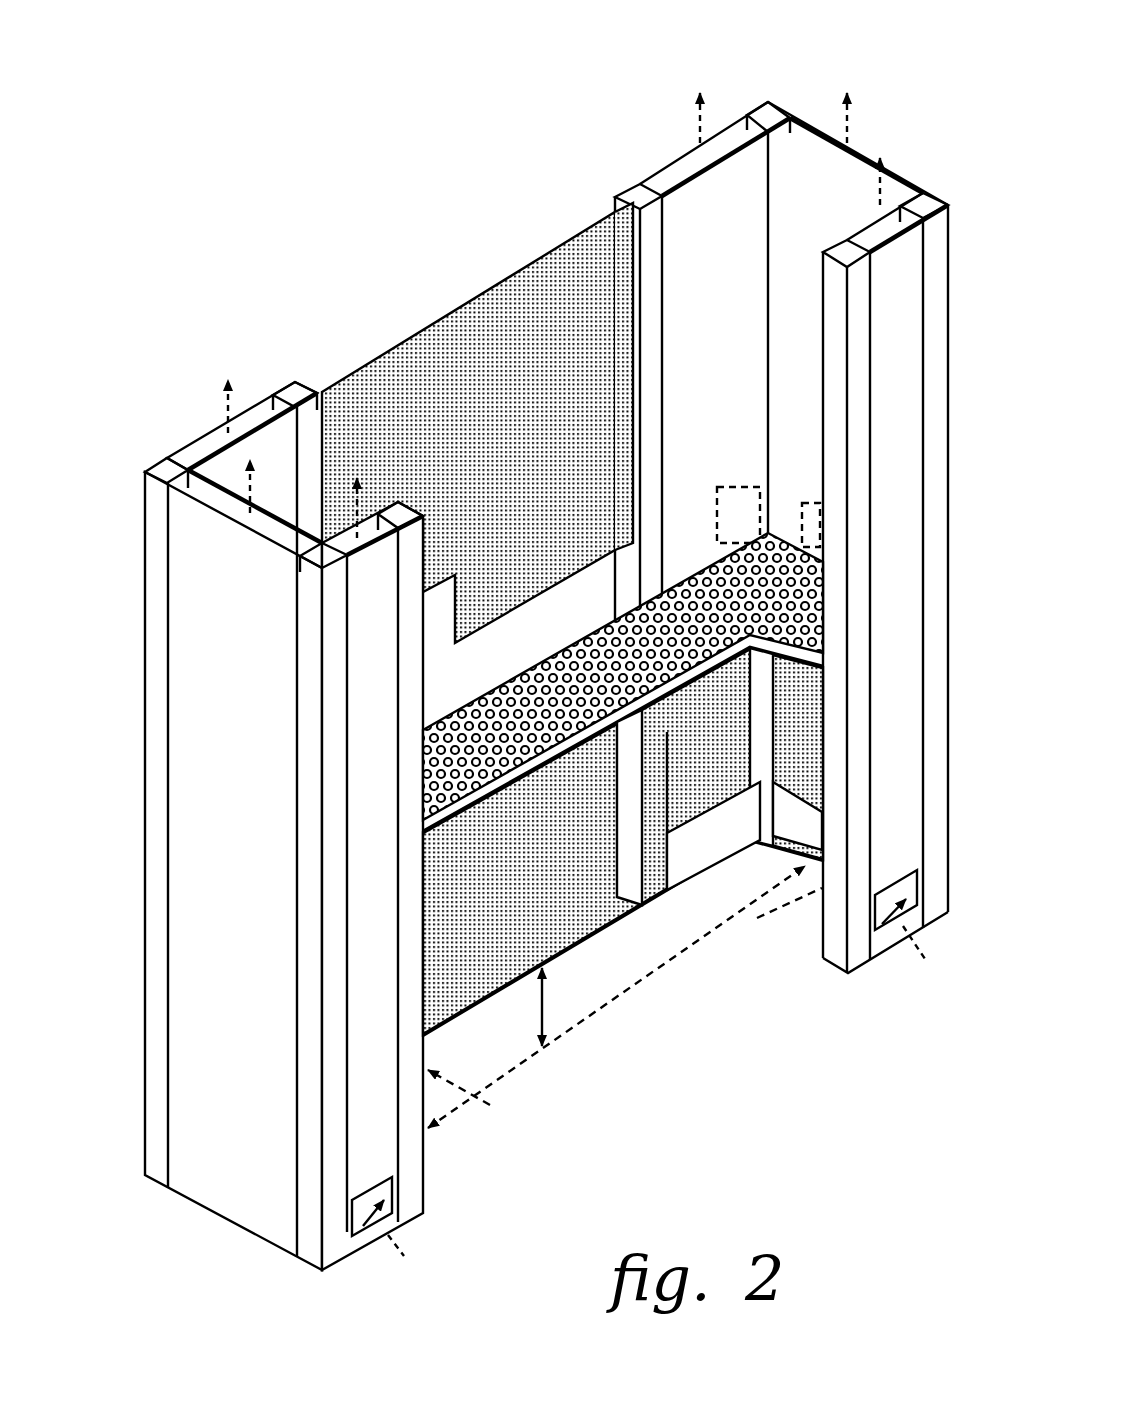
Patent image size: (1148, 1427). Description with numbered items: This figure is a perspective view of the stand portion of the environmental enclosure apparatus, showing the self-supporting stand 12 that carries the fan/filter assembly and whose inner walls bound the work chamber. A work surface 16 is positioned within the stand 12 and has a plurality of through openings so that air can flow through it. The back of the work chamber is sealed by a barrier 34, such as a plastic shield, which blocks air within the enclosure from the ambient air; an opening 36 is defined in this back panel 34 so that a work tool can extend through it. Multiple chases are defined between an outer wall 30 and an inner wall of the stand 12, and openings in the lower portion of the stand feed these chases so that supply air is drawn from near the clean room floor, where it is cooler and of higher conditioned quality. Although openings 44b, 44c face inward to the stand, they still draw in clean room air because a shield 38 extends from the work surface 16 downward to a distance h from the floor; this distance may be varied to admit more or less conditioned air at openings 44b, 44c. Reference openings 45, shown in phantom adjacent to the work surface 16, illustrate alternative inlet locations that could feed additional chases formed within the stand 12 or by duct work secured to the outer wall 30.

The self-supporting stand 12 is at (254, 818).
The work surface 16 is at (593, 640).
The outer wall 30 is at (752, 539).
The barrier 34 is at (456, 302).
The opening 36 is at (458, 676).
The shield 38 is at (623, 888).
The opening 44b is at (820, 873).
The opening 44c is at (714, 876).
The reference openings 45 is at (812, 504).